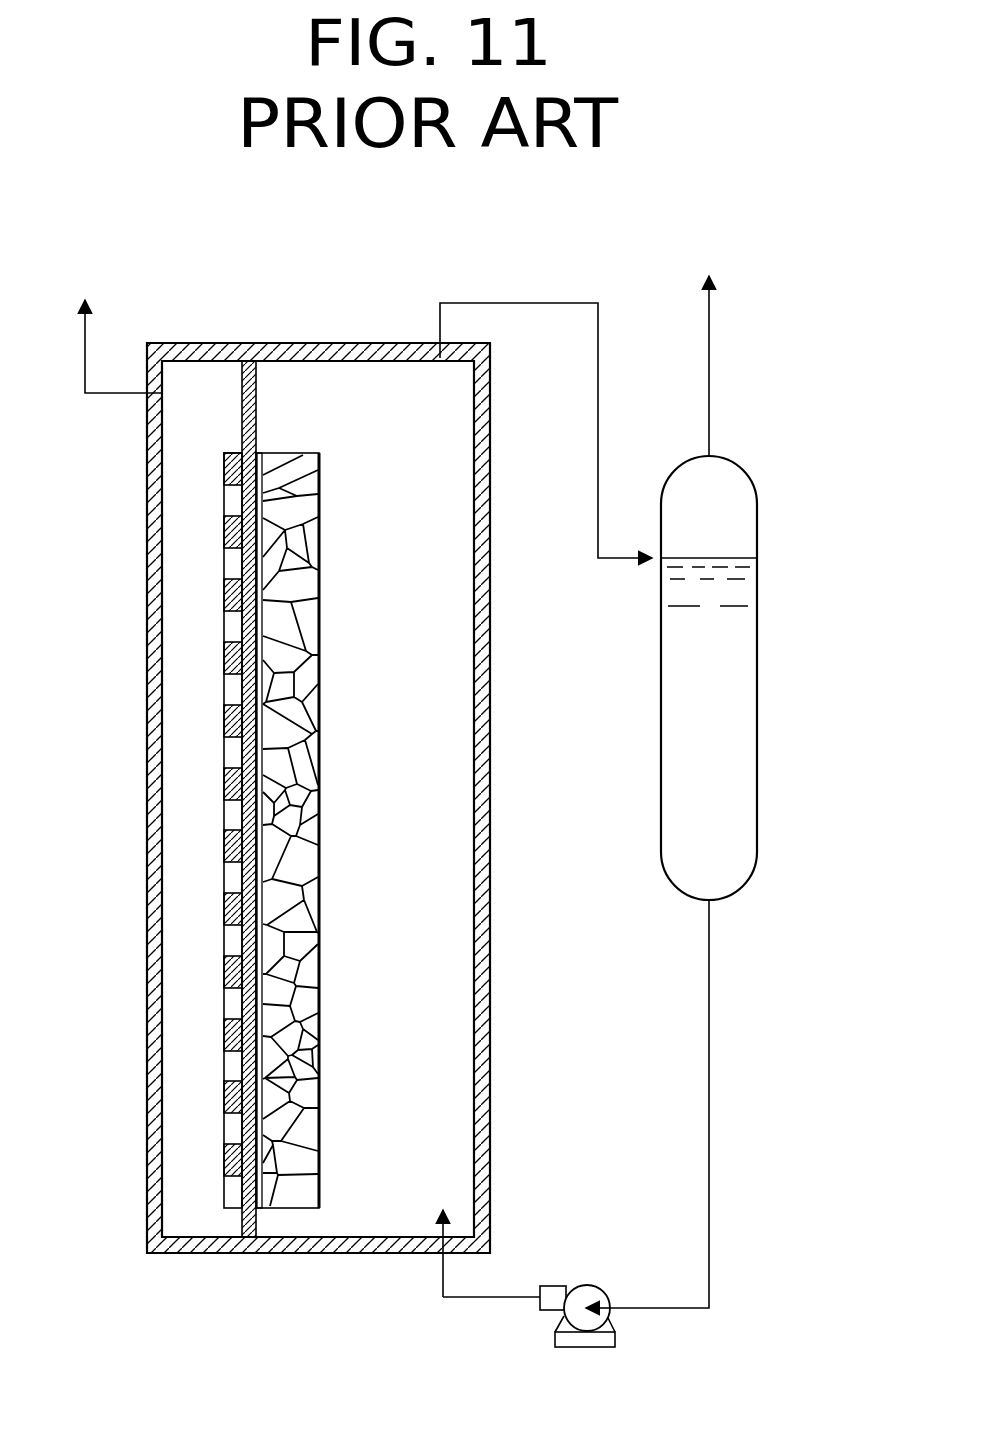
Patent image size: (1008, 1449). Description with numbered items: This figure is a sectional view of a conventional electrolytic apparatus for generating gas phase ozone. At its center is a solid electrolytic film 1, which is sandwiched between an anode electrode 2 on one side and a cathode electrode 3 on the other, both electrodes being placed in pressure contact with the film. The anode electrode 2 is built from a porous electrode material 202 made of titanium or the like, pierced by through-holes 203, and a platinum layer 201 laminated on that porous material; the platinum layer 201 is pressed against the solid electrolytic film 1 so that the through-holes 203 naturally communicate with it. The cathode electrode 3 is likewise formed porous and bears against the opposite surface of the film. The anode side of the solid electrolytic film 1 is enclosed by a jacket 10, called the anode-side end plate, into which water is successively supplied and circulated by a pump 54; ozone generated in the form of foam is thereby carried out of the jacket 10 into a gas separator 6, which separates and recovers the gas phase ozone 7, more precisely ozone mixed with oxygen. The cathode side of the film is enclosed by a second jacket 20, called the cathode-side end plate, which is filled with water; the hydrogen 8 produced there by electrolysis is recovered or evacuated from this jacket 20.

The solid electrolytic film 1 is at (242, 408).
The anode electrode 2 is at (247, 851).
The cathode electrode 3 is at (225, 785).
The gas separator 6 is at (758, 725).
The gas phase ozone 7 is at (710, 378).
The hydrogen 8 is at (85, 347).
The jacket 10 is at (319, 828).
The jacket 20 is at (150, 546).
The pump 54 is at (566, 1290).
The platinum layer 201 is at (250, 1072).
The porous electrode material 202 is at (308, 1200).
The through-holes 203 is at (302, 758).